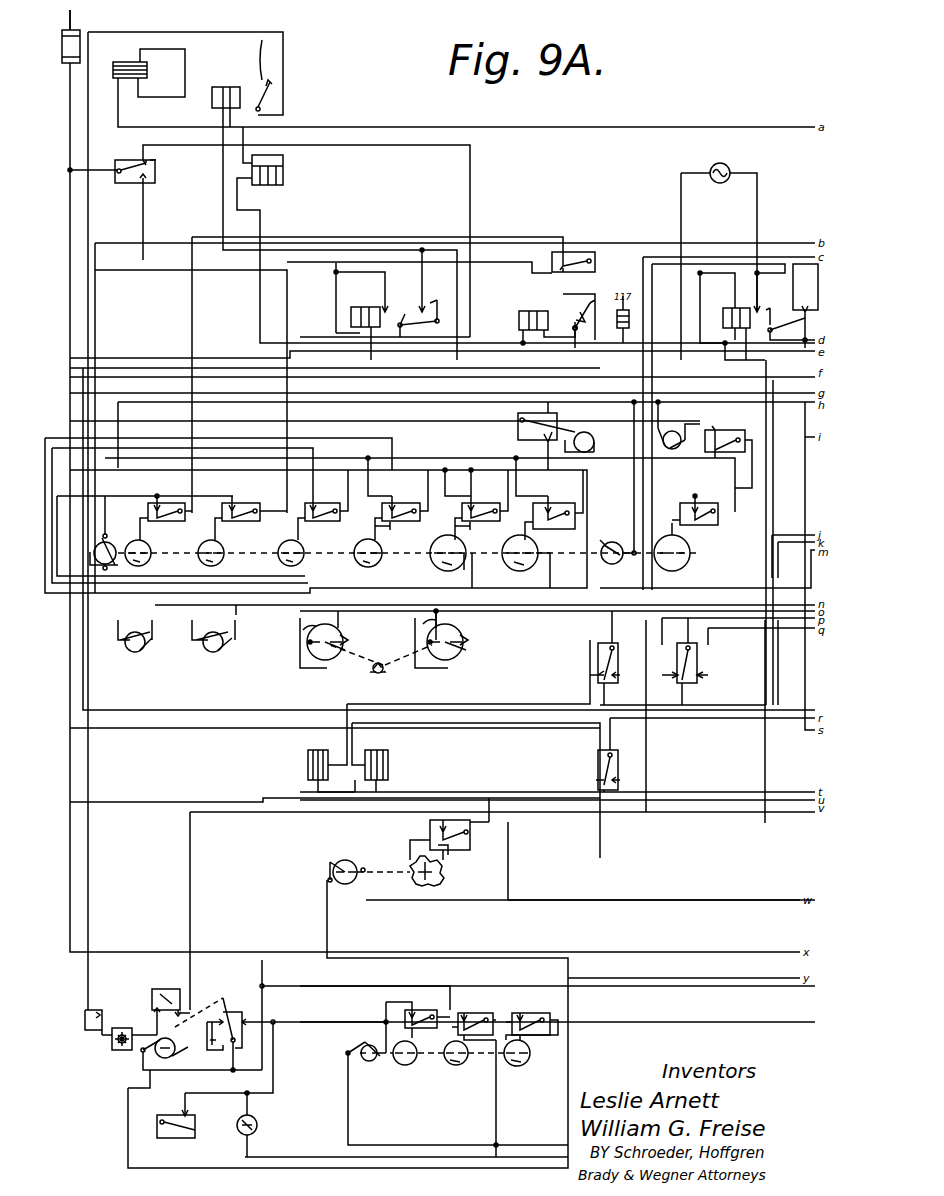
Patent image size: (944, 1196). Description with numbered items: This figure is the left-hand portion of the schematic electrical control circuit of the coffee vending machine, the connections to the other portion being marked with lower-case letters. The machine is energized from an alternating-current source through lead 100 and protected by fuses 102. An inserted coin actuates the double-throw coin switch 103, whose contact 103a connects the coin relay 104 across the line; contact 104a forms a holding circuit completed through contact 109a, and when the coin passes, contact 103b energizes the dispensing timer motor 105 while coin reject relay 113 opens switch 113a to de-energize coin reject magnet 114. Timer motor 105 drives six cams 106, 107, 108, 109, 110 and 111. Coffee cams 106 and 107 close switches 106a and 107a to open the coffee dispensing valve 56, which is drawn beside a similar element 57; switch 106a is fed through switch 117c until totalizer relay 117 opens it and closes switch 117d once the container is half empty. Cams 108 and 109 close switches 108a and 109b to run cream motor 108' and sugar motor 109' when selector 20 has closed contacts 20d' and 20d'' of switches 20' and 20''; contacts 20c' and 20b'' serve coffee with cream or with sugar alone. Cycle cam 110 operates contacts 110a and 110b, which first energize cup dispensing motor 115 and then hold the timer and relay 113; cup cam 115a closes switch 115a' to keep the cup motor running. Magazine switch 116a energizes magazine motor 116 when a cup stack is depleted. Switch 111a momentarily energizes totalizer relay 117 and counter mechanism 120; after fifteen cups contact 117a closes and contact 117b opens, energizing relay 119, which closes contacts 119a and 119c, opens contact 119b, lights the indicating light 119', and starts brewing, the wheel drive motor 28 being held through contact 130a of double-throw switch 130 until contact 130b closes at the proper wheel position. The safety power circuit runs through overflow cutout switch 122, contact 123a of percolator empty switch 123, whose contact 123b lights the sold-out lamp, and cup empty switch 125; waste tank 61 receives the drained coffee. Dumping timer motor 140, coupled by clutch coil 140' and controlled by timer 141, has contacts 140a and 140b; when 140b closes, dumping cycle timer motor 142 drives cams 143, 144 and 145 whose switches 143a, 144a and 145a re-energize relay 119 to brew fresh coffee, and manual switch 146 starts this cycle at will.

The lead 100 is at (75, 20).
The fuses 102 is at (60, 50).
The double-throw coin switch 103 is at (125, 160).
The contact of coin switch 103a is at (146, 186).
The contact of coin switch 103b is at (158, 160).
The coin relay 104 is at (358, 307).
The contact of coin relay 104a is at (448, 280).
The dispensing timer motor 105 is at (110, 575).
The coffee cam 106 is at (150, 552).
The switch of coffee cam 106a is at (170, 521).
The coffee cam 107 is at (224, 550).
The switch of coffee cam 107a is at (240, 503).
The cam 108 is at (309, 551).
The switch of cam 108a is at (322, 503).
The cream motor 108' is at (144, 656).
The cam 109 is at (353, 566).
The contact of cam-operated switch 109a is at (392, 528).
The switch of cam 109b is at (400, 503).
The sugar motor 109' is at (219, 656).
The cycle cam 110 is at (438, 568).
The contact of cycle cam 110a is at (473, 528).
The contact of cycle cam 110b is at (480, 503).
The cam 111 is at (500, 565).
The switch of cam 111a is at (556, 503).
The coin reject relay 113 is at (218, 87).
The coin reject relay switch 113a is at (264, 59).
The coin reject magnet 114 is at (140, 62).
The cup dispensing motor 115 is at (612, 542).
The cam of cup motor 115a is at (697, 553).
The cam switch 115a' is at (711, 516).
The magazine motor 116 is at (672, 431).
The cup magazine switch 116a is at (728, 430).
The totalizer relay 117 is at (526, 311).
The contact of totalizer relay 117a is at (560, 294).
The contact of totalizer relay 117b is at (588, 335).
The switch of totalizer relay 117c is at (566, 252).
The switch of totalizer relay 117d is at (566, 272).
The relay 119 is at (731, 315).
The light 119' is at (727, 159).
The contact of relay 119a is at (772, 300).
The contact of relay 119b is at (792, 333).
The contact of relay 119c is at (810, 264).
The counter mechanism 120 is at (283, 172).
The overflow cutout switch 122 is at (518, 417).
The waste tank 61 is at (594, 446).
The percolator empty switch 123 is at (688, 683).
The contact of percolator empty switch 123a is at (670, 676).
The contact of percolator empty switch 123b is at (724, 665).
The cup empty switch 125 is at (598, 652).
The double-throw switch 130 is at (460, 812).
The contact of switch 130a is at (432, 847).
The contact of switch 130b is at (444, 876).
The wheel drive motor 28 is at (345, 860).
The selector 20 is at (381, 674).
The switch 20' is at (340, 641).
The switch 20'' is at (459, 643).
The contact of switch 20b'' is at (440, 616).
The contact of switch 20c' is at (287, 631).
The contact of switch 20d' is at (356, 647).
The contact of switch 20d'' is at (473, 655).
The coffee dispensing valve 56 is at (306, 765).
The coil 57 is at (388, 765).
The dumping timer motor 140 is at (175, 1043).
The clutch coil 140' is at (164, 999).
The contact of dumping timer switch 140a is at (214, 1050).
The switch of dumping timer 140b is at (248, 1010).
The timer 141 is at (122, 1028).
The dumping cycle timer motor 142 is at (362, 1061).
The cam 143 is at (420, 1068).
The switch 143a is at (422, 1010).
The cam 144 is at (448, 1062).
The switch 144a is at (476, 1013).
The cam 145 is at (530, 1058).
The switch 145a is at (530, 1013).
The manual switch 146 is at (165, 1138).